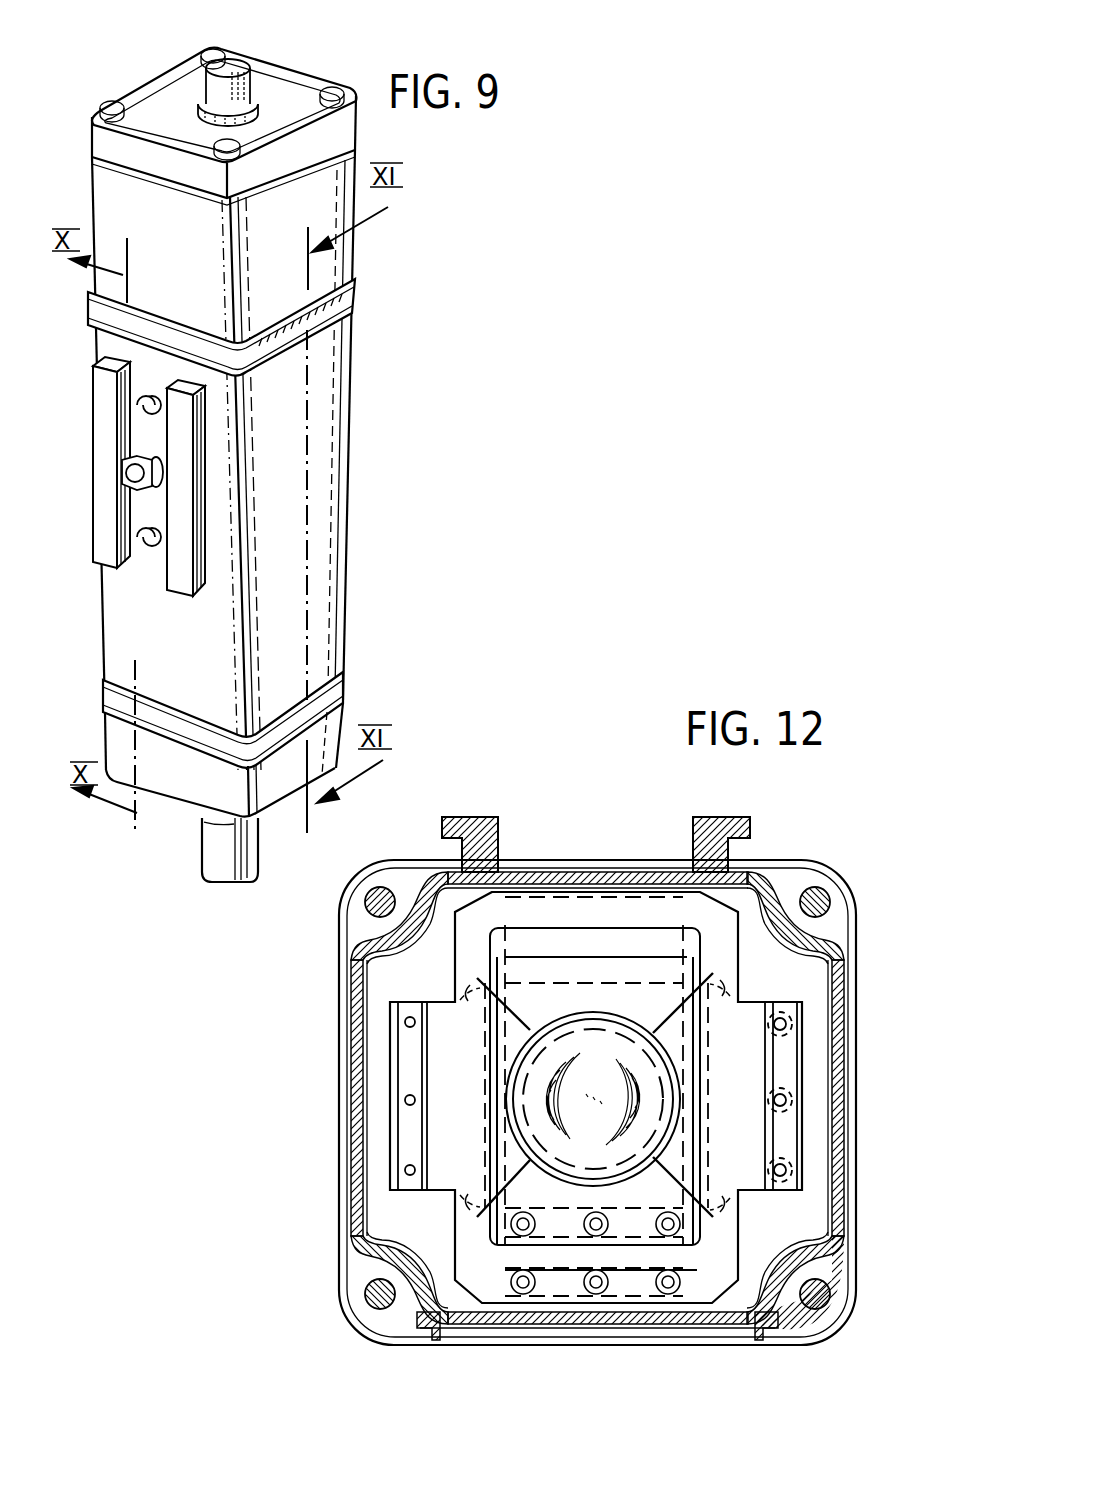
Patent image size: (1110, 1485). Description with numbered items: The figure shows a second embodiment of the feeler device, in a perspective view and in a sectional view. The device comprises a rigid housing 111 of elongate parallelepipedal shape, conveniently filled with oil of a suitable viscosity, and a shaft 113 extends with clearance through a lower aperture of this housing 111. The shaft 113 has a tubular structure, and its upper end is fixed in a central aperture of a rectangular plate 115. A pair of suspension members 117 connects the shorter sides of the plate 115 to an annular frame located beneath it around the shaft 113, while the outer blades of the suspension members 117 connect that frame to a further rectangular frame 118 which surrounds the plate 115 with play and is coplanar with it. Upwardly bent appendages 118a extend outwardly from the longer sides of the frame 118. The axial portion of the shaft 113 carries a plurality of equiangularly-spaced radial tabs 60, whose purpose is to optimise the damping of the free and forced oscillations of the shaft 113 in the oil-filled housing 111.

In FIG. 12, the radial tabs 60 is at (452, 1000).
In FIG. 9, the rigid housing 111 is at (320, 428).
In FIG. 12, the rigid housing 111 is at (847, 1142).
In FIG. 9, the shaft 113 is at (217, 843).
In FIG. 12, the shaft 113 is at (582, 997).
In FIG. 12, the rectangular plate 115 is at (632, 967).
In FIG. 12, the suspension members 117 is at (690, 935).
In FIG. 12, the rectangular frame 118 is at (492, 905).
In FIG. 12, the upwardly bent appendages 118a is at (388, 1087).